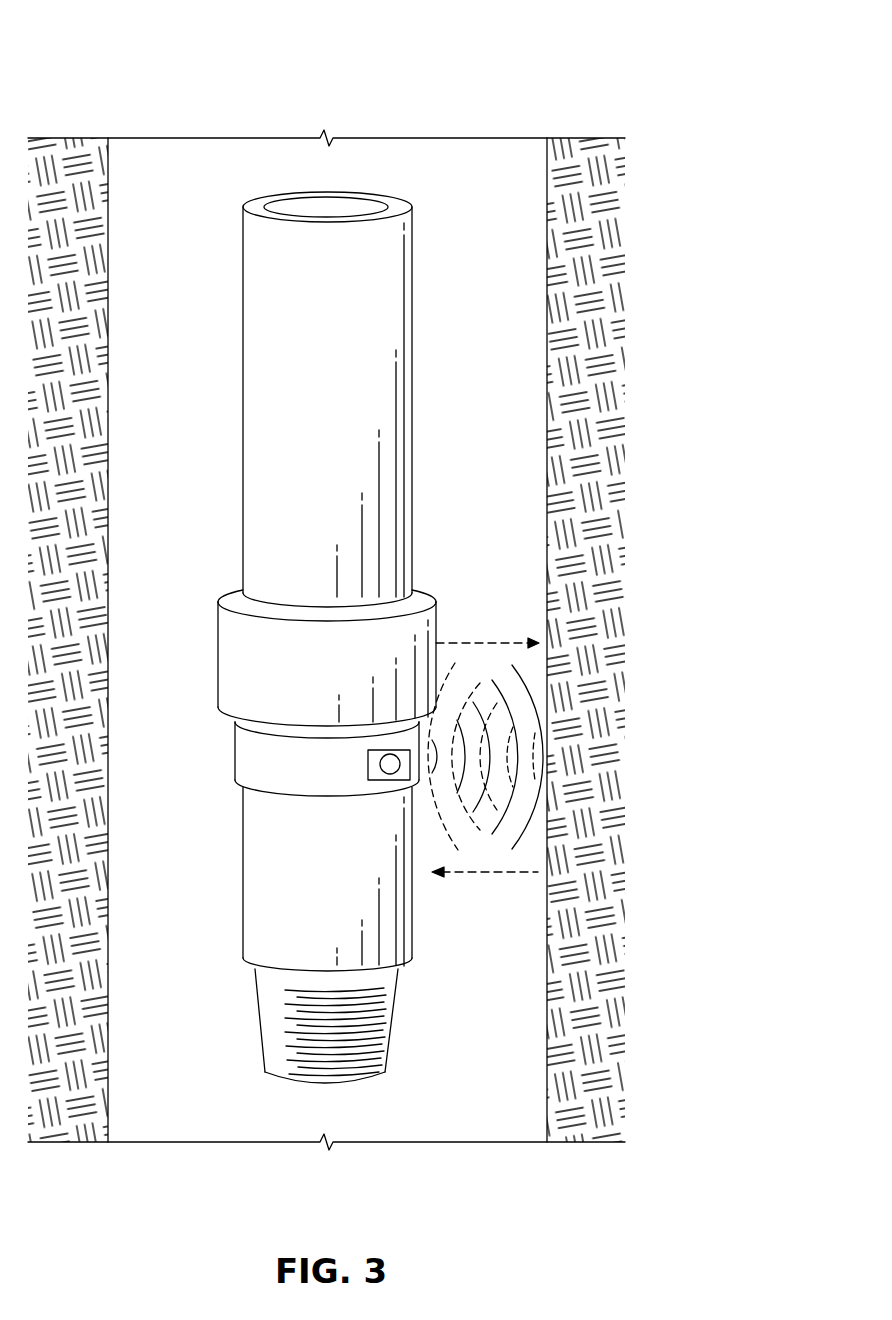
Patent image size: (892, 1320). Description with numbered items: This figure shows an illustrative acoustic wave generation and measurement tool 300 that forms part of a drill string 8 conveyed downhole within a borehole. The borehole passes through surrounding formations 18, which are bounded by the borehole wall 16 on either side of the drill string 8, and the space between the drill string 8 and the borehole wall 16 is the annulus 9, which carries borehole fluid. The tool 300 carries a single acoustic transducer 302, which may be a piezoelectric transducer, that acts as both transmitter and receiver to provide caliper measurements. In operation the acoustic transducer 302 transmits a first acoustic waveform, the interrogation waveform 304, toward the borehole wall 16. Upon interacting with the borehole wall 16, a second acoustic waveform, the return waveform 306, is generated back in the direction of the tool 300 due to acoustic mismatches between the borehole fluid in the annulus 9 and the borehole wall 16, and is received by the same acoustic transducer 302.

The acoustic wave generation and measurement tool 300 is at (153, 91).
The drill string 8 is at (243, 262).
The annulus 9 is at (473, 328).
The borehole wall 16 is at (547, 205).
The formations 18 is at (607, 202).
The acoustic transducer 302 is at (386, 764).
The interrogation waveform 304 is at (480, 642).
The return waveform 306 is at (490, 874).